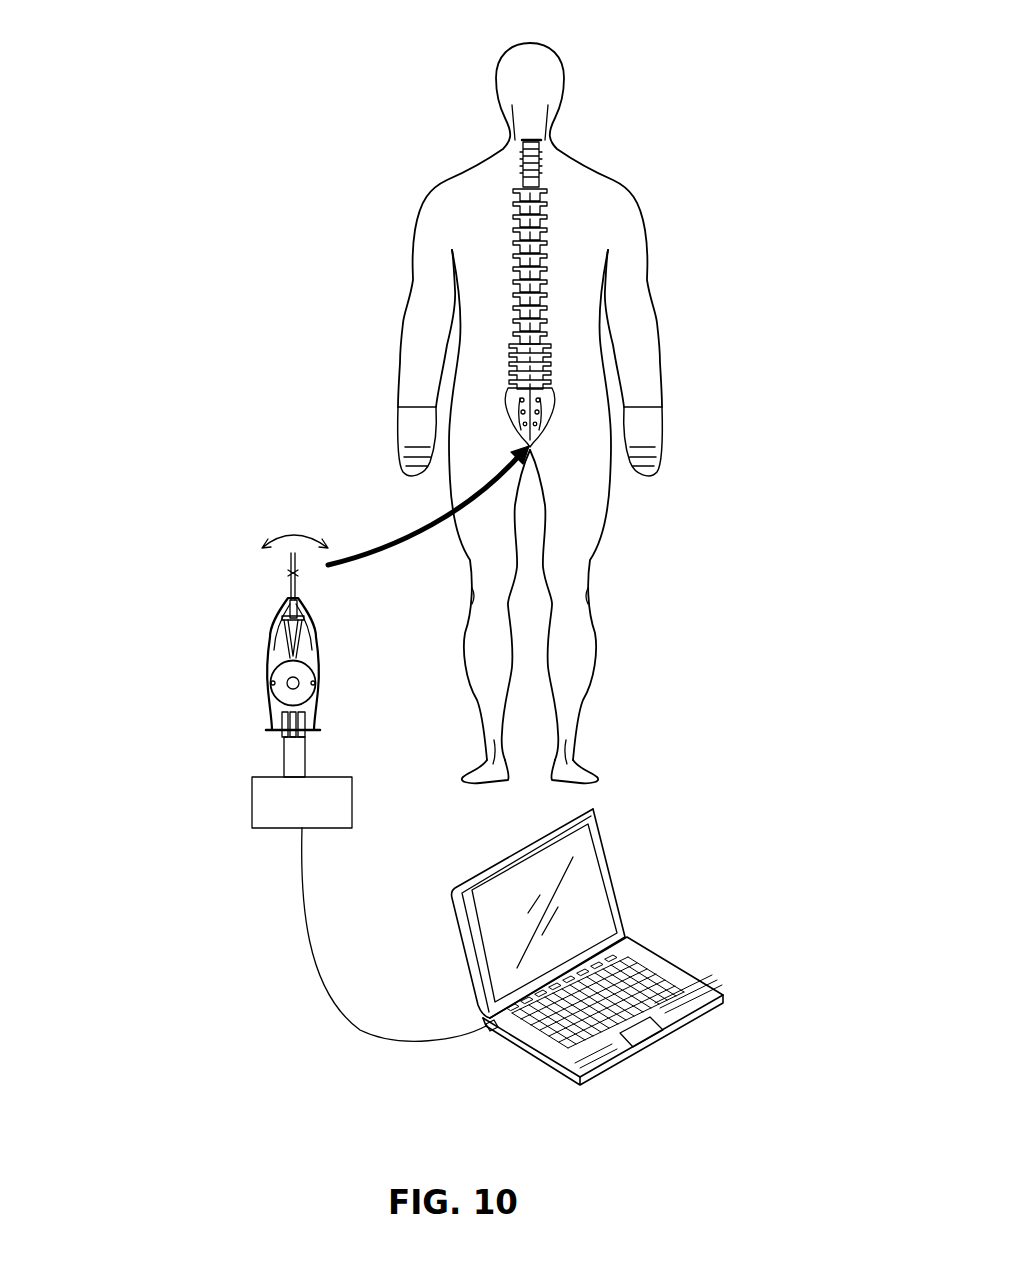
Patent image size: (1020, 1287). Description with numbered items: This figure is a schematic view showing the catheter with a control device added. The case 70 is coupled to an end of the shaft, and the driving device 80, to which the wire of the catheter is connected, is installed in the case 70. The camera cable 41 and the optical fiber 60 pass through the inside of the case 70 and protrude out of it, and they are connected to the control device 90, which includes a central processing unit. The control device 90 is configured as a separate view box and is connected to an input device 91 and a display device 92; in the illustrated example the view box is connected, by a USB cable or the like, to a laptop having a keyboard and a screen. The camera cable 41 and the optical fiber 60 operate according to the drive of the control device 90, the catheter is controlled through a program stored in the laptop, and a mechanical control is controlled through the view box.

The camera cable 41 is at (284, 757).
The optical fiber 60 is at (305, 760).
The case 70 is at (273, 712).
The driving device 80 is at (288, 683).
The control device 90 is at (267, 828).
The input device 91 is at (622, 997).
The display device 92 is at (590, 903).